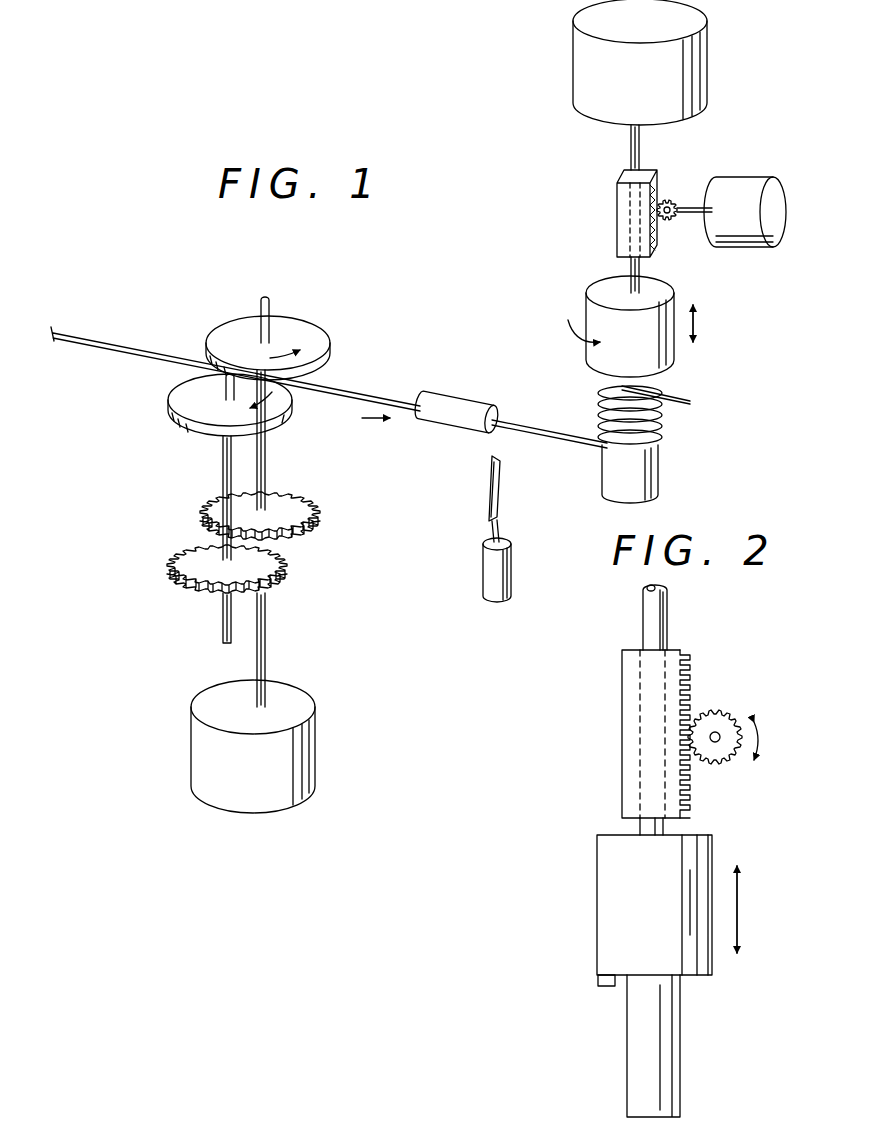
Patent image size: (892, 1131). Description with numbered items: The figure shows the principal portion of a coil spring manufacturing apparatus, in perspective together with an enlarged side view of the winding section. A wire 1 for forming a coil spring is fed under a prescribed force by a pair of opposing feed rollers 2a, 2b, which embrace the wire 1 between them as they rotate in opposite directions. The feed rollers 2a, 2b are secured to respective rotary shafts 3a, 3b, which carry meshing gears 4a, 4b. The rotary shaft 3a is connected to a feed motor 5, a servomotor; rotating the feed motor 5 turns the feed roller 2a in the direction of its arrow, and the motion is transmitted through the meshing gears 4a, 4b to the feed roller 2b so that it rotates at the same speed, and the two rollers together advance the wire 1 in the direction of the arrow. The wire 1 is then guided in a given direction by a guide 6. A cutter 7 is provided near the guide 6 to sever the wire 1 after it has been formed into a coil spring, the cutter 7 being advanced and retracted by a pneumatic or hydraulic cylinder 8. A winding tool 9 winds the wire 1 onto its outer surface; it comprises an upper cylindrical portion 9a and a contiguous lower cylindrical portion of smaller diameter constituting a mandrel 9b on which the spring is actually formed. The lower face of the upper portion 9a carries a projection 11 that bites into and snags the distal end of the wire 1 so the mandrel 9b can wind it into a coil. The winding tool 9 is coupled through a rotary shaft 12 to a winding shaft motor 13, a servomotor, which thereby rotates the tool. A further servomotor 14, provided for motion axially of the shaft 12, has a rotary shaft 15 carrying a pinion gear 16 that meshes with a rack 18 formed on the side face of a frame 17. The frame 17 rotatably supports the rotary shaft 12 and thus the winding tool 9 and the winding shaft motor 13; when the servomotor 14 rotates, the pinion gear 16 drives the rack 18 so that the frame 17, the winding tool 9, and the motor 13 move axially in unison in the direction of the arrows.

In FIG. 1, the wire 1 is at (148, 352).
In FIG. 1, the feed roller 2a is at (322, 332).
In FIG. 1, the feed roller 2b is at (195, 416).
In FIG. 1, the rotary shaft 3a is at (268, 457).
In FIG. 1, the rotary shaft 3b is at (222, 465).
In FIG. 1, the meshing gear 4a is at (320, 510).
In FIG. 1, the meshing gear 4b is at (170, 566).
In FIG. 1, the feed motor 5 is at (316, 745).
In FIG. 1, the guide 6 is at (484, 400).
In FIG. 1, the cutter 7 is at (503, 508).
In FIG. 1, the pneumatic or hydraulic cylinder 8 is at (509, 576).
In FIG. 1, the winding tool 9 is at (633, 389).
In FIG. 2, the winding tool 9 is at (626, 967).
In FIG. 1, the upper cylindrical portion 9a is at (645, 365).
In FIG. 2, the upper cylindrical portion 9a is at (597, 925).
In FIG. 1, the mandrel 9b is at (656, 470).
In FIG. 2, the mandrel 9b is at (678, 1057).
In FIG. 1, the projection 11 is at (600, 401).
In FIG. 2, the projection 11 is at (600, 986).
In FIG. 1, the rotary shaft 12 is at (630, 155).
In FIG. 2, the rotary shaft 12 is at (668, 620).
In FIG. 1, the winding shaft motor 13 is at (700, 86).
In FIG. 1, the servomotor 14 is at (756, 185).
In FIG. 1, the rotary shaft 15 is at (690, 214).
In FIG. 2, the rotary shaft 15 is at (719, 743).
In FIG. 1, the pinion gear 16 is at (668, 200).
In FIG. 2, the pinion gear 16 is at (735, 712).
In FIG. 1, the frame 17 is at (617, 230).
In FIG. 2, the frame 17 is at (645, 731).
In FIG. 2, the rack 18 is at (692, 688).